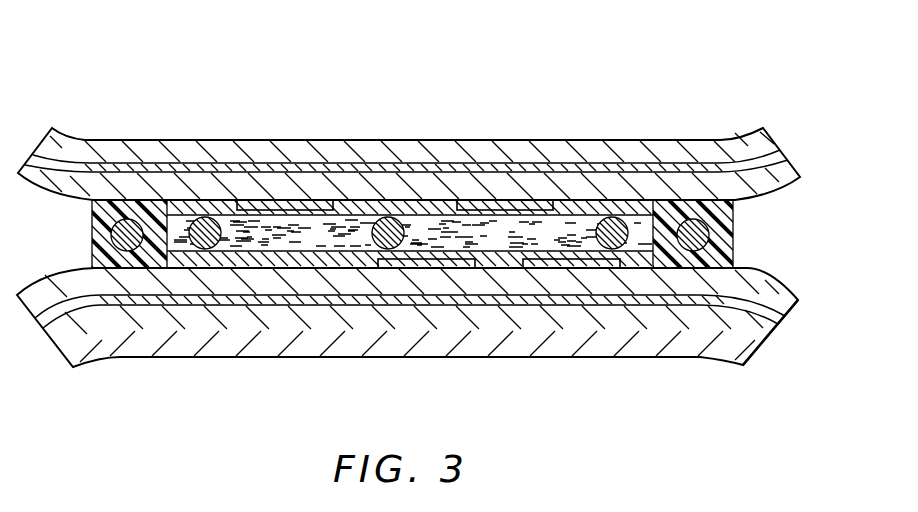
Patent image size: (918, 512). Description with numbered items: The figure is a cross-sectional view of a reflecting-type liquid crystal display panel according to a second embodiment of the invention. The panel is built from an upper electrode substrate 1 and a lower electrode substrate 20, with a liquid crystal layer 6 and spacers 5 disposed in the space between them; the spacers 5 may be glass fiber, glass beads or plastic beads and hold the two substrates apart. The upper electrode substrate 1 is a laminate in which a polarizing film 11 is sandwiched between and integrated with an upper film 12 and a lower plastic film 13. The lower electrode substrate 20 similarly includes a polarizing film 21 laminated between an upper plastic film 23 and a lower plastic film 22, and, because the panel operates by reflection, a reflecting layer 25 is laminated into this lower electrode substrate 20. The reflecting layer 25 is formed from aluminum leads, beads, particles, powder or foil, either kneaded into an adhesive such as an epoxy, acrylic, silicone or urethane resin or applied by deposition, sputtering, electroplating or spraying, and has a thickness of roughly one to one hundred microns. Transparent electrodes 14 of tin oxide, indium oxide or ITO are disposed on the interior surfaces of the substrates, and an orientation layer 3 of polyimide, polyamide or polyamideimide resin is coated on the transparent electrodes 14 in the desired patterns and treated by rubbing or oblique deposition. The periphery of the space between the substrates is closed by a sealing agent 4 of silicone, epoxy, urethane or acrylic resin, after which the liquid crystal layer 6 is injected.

The upper electrode substrate 1 is at (443, 155).
The orientation layer 3 is at (178, 212).
The sealing agent 4 is at (152, 256).
The spacers 5 is at (383, 248).
The liquid crystal layer 6 is at (273, 240).
The polarizing film 11 is at (776, 156).
The upper film 12 is at (760, 134).
The lower plastic film 13 is at (785, 180).
The transparent electrodes 14 is at (497, 205).
The lower electrode substrate 20 is at (417, 363).
The polarizing film 21 is at (677, 300).
The lower plastic film 22 is at (710, 343).
The upper plastic film 23 is at (643, 288).
The reflecting layer 25 is at (773, 354).